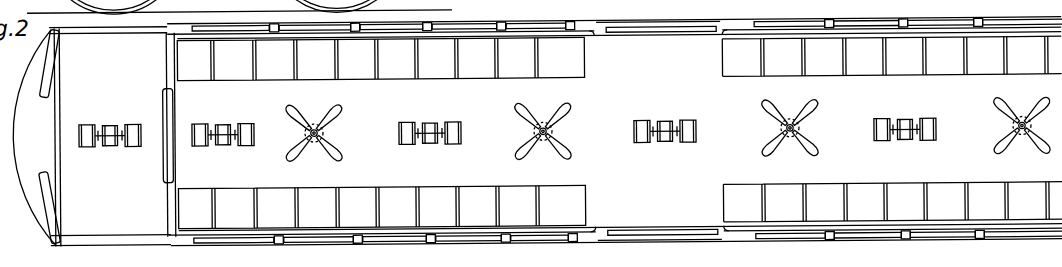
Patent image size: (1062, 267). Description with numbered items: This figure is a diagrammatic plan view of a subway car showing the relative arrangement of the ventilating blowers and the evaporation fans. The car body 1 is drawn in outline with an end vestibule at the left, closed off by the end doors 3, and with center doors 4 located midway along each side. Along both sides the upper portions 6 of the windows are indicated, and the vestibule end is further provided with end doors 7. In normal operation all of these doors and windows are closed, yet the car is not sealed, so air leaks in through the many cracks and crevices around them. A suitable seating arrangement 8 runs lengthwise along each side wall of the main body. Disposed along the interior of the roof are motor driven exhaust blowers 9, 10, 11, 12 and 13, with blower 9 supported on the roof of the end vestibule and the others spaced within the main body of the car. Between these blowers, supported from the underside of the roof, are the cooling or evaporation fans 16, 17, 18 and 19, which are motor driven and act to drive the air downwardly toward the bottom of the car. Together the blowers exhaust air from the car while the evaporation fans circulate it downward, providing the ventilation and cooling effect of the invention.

The car body 1 is at (33, 197).
The end doors 3 is at (104, 35).
The center doors 4 is at (697, 29).
The upper portions of the windows 6 is at (507, 23).
The end doors 7 is at (48, 106).
The seating arrangement 8 is at (478, 80).
The motor driven exhaust blower 9 is at (118, 126).
The motor driven exhaust blower 10 is at (225, 124).
The motor driven exhaust blower 11 is at (430, 125).
The motor driven exhaust blower 12 is at (665, 125).
The motor driven exhaust blower 13 is at (908, 119).
The evaporation fan 16 is at (322, 134).
The evaporation fan 17 is at (552, 134).
The evaporation fan 18 is at (800, 132).
The evaporation fan 19 is at (1012, 131).